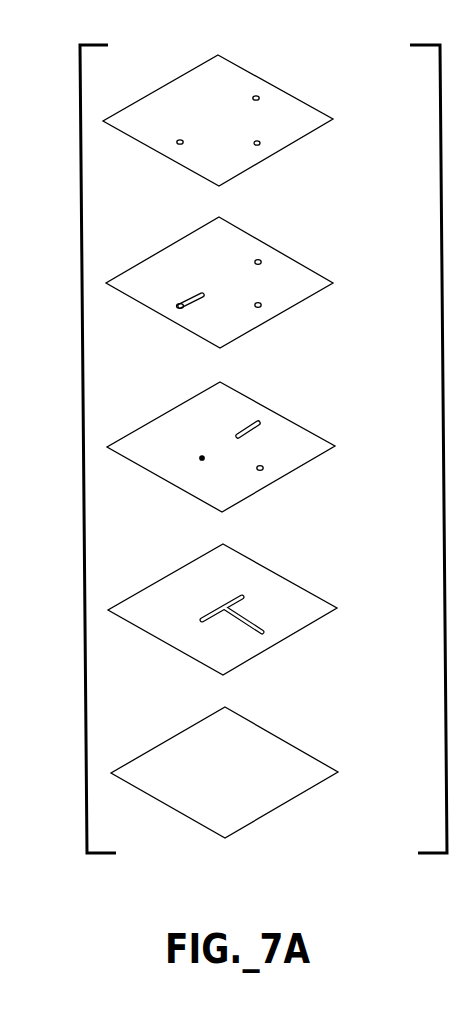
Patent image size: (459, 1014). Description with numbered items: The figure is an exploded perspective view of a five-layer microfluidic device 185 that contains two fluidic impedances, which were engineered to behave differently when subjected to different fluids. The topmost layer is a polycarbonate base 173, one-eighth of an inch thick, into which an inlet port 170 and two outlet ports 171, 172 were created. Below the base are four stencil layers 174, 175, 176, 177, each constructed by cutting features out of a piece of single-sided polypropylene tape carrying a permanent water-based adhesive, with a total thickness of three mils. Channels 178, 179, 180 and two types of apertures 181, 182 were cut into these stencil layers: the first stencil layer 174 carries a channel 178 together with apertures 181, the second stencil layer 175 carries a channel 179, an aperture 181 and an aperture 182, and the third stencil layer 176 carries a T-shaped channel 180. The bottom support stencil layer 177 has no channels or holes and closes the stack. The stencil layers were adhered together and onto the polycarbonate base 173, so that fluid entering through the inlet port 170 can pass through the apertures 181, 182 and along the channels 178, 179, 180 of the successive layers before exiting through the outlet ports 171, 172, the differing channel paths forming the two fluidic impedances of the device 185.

The inlet port 170 is at (257, 146).
The outlet port 171 is at (257, 95).
The outlet port 172 is at (176, 142).
The polycarbonate base 173 is at (319, 130).
The stencil layer 174 is at (322, 293).
The stencil layer 175 is at (320, 458).
The stencil layer 176 is at (327, 618).
The support stencil layer 177 is at (323, 783).
The channel 178 is at (176, 306).
The channel 179 is at (259, 420).
The channel 180 is at (212, 613).
The aperture 181 is at (259, 259).
The aperture 182 is at (202, 458).
The microfluidic device 185 is at (80, 436).